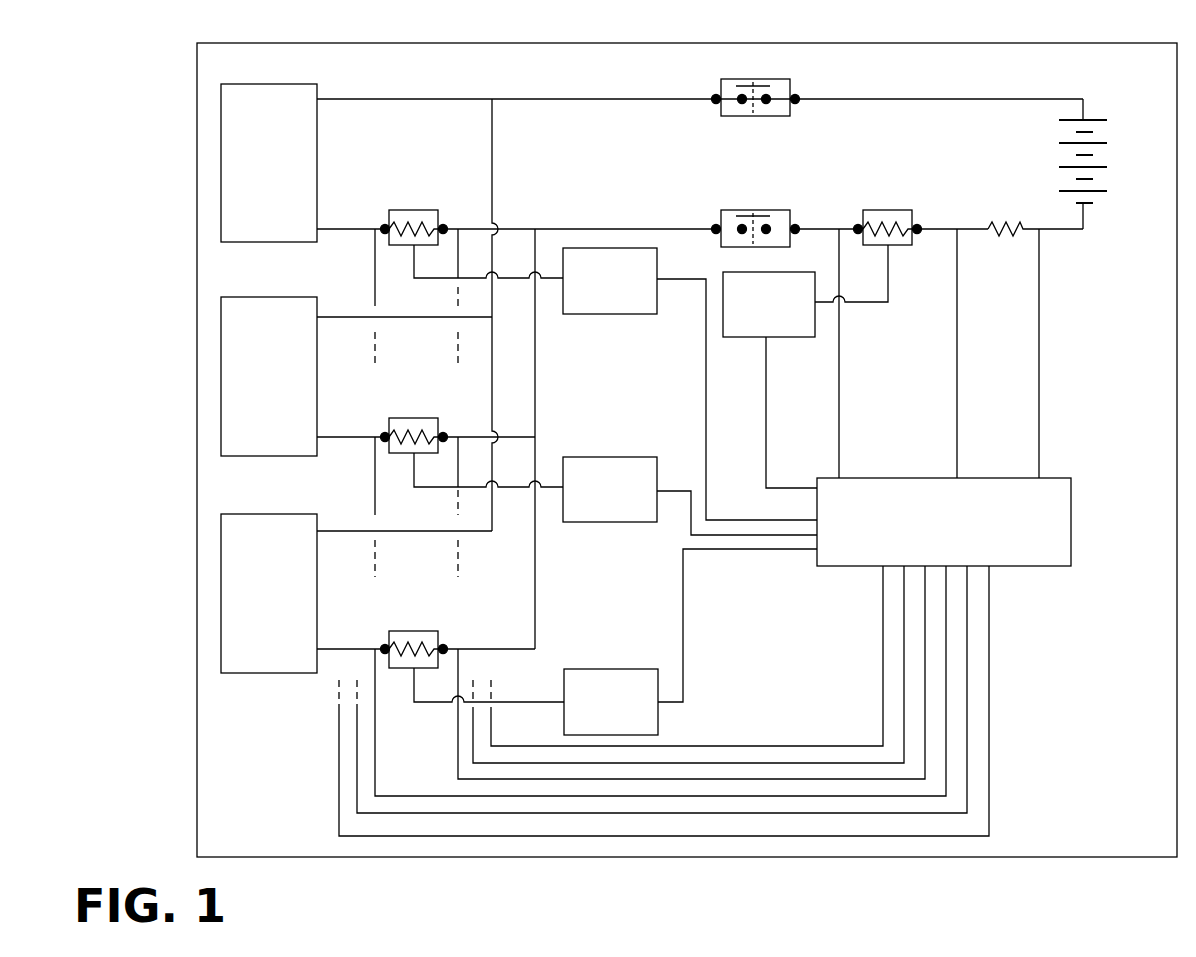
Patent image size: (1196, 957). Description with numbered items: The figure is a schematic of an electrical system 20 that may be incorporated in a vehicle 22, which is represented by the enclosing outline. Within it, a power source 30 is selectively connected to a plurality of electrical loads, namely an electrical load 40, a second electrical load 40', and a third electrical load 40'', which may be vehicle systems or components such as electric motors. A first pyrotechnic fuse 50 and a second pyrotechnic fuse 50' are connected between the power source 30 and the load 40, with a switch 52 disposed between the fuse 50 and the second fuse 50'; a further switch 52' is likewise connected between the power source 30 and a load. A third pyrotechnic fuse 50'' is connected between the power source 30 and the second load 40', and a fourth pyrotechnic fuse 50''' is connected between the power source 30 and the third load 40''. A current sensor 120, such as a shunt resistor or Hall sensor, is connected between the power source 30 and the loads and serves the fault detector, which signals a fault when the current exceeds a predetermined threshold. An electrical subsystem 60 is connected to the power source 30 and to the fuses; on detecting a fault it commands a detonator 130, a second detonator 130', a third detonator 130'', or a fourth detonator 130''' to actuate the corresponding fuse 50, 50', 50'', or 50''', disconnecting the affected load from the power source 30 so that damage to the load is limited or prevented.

The electrical system 20 is at (436, 82).
The vehicle 22 is at (1078, 43).
The power source 30 is at (1102, 164).
The electrical load 40 is at (269, 163).
The second electrical load 40' is at (269, 376).
The third electrical load 40'' is at (269, 593).
The pyrotechnic fuse 50 is at (545, 275).
The second pyrotechnic fuse 50' is at (901, 240).
The third pyrotechnic fuse 50'' is at (469, 485).
The fourth pyrotechnic fuse 50''' is at (664, 701).
The switch 52 is at (785, 213).
The switch 52' is at (756, 85).
The electrical subsystem 60 is at (944, 397).
The current sensor 120 is at (1031, 215).
The detonator 130 is at (690, 384).
The second detonator 130' is at (770, 380).
The third detonator 130'' is at (690, 496).
The fourth detonator 130''' is at (690, 642).